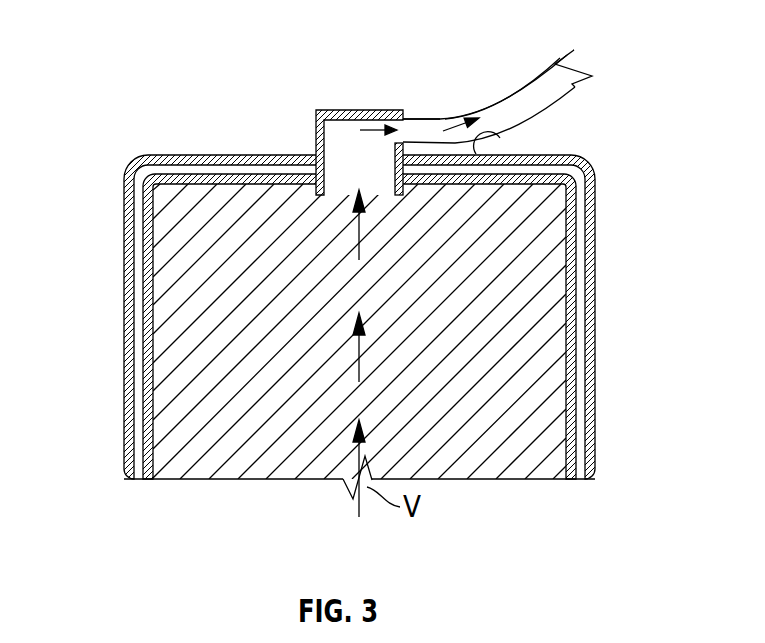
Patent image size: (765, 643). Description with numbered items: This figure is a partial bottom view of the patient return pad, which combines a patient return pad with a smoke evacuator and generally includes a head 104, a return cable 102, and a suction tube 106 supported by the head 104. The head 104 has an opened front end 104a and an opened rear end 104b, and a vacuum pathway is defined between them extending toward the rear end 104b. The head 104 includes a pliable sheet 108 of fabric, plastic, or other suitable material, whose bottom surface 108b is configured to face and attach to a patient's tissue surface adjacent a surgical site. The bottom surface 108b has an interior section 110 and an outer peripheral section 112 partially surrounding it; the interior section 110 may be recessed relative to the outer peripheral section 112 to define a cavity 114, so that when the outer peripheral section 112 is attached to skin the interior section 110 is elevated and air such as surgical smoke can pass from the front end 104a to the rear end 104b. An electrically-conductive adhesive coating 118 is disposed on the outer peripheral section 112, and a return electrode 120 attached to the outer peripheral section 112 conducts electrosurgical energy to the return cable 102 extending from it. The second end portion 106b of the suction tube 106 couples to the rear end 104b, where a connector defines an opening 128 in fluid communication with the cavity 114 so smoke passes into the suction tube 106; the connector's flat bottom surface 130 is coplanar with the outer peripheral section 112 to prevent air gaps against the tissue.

The return cable 102 is at (534, 106).
The head 104 is at (632, 252).
The opened front end 104a is at (496, 481).
The opened rear end 104b is at (308, 144).
The suction tube 106 is at (560, 56).
The second end portion 106b is at (421, 119).
The pliable sheet 108 is at (125, 446).
The bottom surface 108b is at (127, 374).
The interior section 110 is at (176, 432).
The outer peripheral section 112 is at (130, 256).
The cavity 114 is at (231, 480).
The electrically-conductive adhesive coating 118 is at (591, 444).
The return electrode 120 is at (138, 168).
The opening 128 is at (370, 108).
The flat bottom surface 130 is at (345, 130).